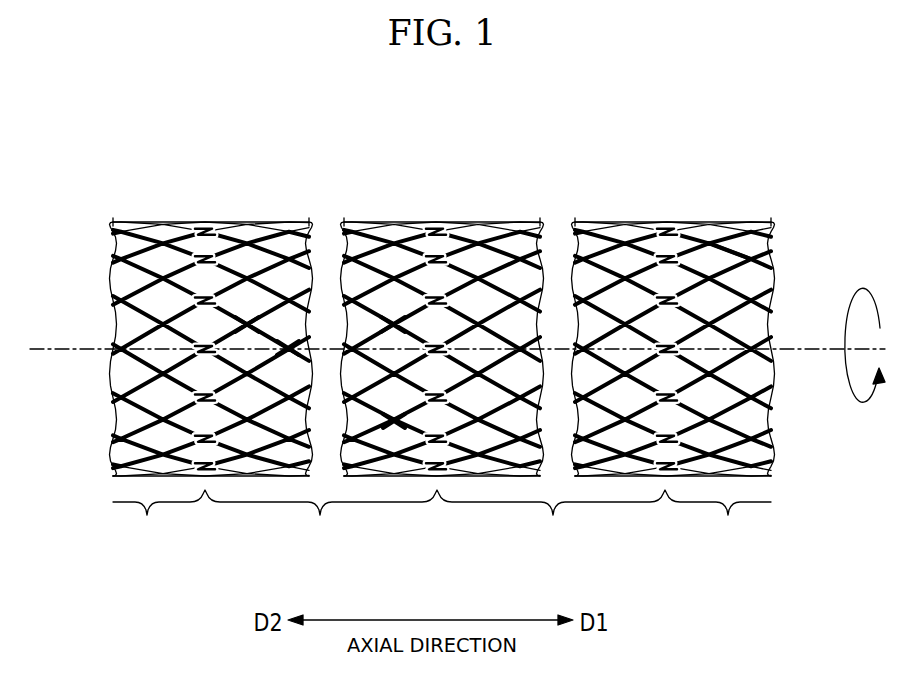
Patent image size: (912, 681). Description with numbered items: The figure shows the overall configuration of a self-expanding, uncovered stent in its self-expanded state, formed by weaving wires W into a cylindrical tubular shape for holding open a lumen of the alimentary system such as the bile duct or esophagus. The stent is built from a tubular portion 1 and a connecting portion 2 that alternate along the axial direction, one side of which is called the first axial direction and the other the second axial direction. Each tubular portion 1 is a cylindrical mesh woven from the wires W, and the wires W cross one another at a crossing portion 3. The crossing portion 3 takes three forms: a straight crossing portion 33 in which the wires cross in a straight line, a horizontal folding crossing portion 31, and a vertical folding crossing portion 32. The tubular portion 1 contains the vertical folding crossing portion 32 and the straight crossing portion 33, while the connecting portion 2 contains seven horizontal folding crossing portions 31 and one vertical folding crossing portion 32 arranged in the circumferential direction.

The tubular portion 1 is at (442, 386).
The connecting portion 2 is at (665, 220).
The crossing portion 3 is at (443, 345).
The horizontal folding crossing portion 31 is at (200, 298).
The vertical folding crossing portion 32 is at (663, 257).
The straight crossing portion 33 is at (400, 418).
The wire W is at (731, 237).